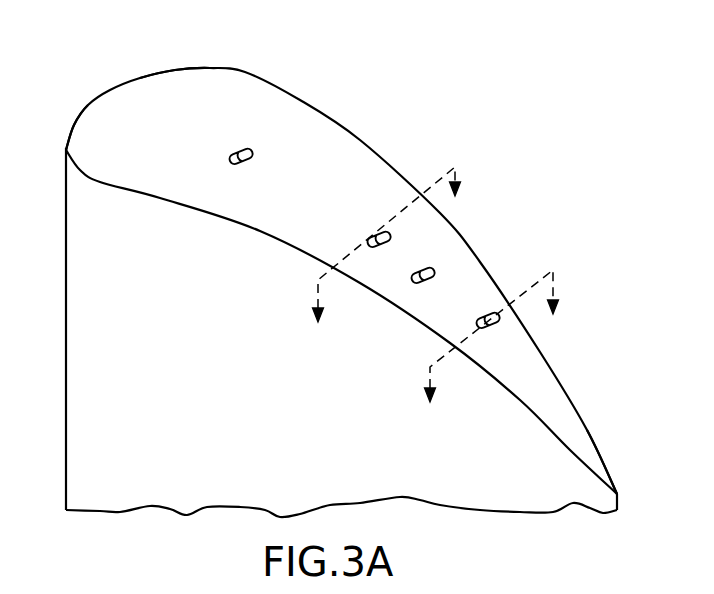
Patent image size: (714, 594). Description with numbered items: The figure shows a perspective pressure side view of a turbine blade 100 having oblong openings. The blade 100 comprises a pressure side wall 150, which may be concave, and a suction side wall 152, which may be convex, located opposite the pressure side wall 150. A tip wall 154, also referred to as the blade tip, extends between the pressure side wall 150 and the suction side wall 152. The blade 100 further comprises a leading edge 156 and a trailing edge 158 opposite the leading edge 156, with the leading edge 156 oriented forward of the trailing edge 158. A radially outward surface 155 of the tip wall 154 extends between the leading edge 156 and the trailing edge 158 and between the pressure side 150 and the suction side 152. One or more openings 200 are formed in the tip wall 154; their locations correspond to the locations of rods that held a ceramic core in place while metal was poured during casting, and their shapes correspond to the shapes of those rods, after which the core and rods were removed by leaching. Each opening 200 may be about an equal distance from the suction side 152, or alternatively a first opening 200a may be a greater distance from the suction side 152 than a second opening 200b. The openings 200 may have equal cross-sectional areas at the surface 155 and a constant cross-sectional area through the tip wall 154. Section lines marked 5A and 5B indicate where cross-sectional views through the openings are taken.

The turbine blade 100 is at (361, 270).
The pressure side wall 150 is at (341, 332).
The suction side wall 152 is at (361, 140).
The tip wall 154 is at (172, 98).
The radially outward surface 155 is at (308, 193).
The leading edge 156 is at (88, 98).
The trailing edge 158 is at (620, 507).
The openings 200 is at (243, 136).
The first opening 200a is at (500, 303).
The second opening 200b is at (380, 224).
The section line 5A is at (494, 351).
The section line 5B is at (389, 262).